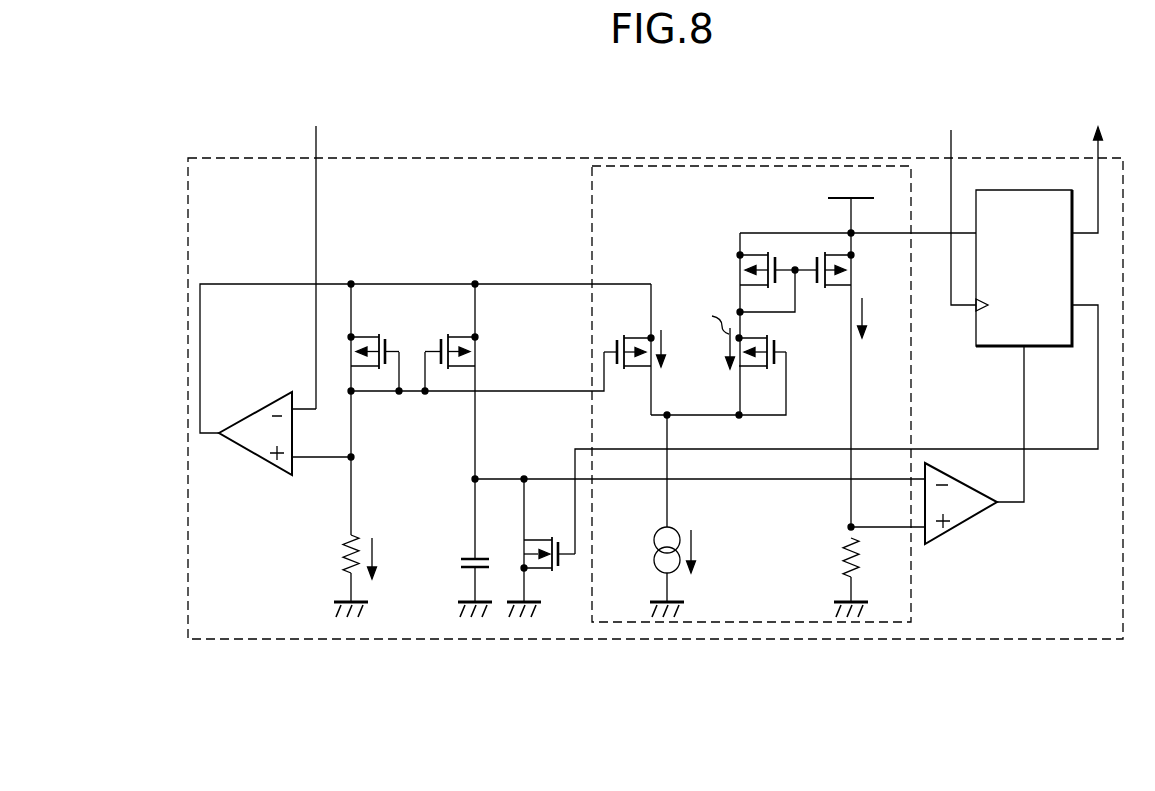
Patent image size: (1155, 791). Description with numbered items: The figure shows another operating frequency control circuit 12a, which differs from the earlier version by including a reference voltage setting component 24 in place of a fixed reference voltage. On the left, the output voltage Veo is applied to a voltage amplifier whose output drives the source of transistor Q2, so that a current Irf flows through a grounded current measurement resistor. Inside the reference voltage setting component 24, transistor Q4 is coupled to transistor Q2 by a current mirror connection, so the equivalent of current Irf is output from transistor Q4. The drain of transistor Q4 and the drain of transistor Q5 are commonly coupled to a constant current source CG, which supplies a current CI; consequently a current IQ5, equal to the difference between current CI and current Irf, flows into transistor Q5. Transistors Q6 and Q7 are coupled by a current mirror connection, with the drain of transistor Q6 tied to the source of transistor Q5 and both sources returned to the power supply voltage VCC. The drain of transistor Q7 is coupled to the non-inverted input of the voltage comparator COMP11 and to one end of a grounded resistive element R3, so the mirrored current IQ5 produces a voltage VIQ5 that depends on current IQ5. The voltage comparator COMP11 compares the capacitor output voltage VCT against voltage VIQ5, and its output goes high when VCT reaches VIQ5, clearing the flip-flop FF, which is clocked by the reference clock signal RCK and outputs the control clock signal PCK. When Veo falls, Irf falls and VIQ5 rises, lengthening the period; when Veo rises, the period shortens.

The operating frequency control circuit 12a is at (497, 157).
The reference voltage setting component 24 is at (592, 200).
The transistor Q2 is at (373, 350).
The transistor Q4 is at (629, 349).
The transistor Q5 is at (761, 368).
The transistor Q6 is at (751, 324).
The transistor Q7 is at (841, 362).
The resistive element R3 is at (864, 577).
The voltage comparator COMP11 is at (963, 522).
The constant current source CG is at (657, 563).
The output voltage Veo is at (314, 256).
The current Irf is at (531, 454).
The current IQ5 is at (788, 333).
The power supply voltage VCC is at (851, 184).
The output voltage VCT is at (456, 450).
The reference clock signal RCK is at (951, 202).
The control clock signal PCK is at (1094, 163).
The voltage VIQ5 is at (886, 515).
The current CI is at (705, 551).
The flip-flop FF is at (1024, 268).